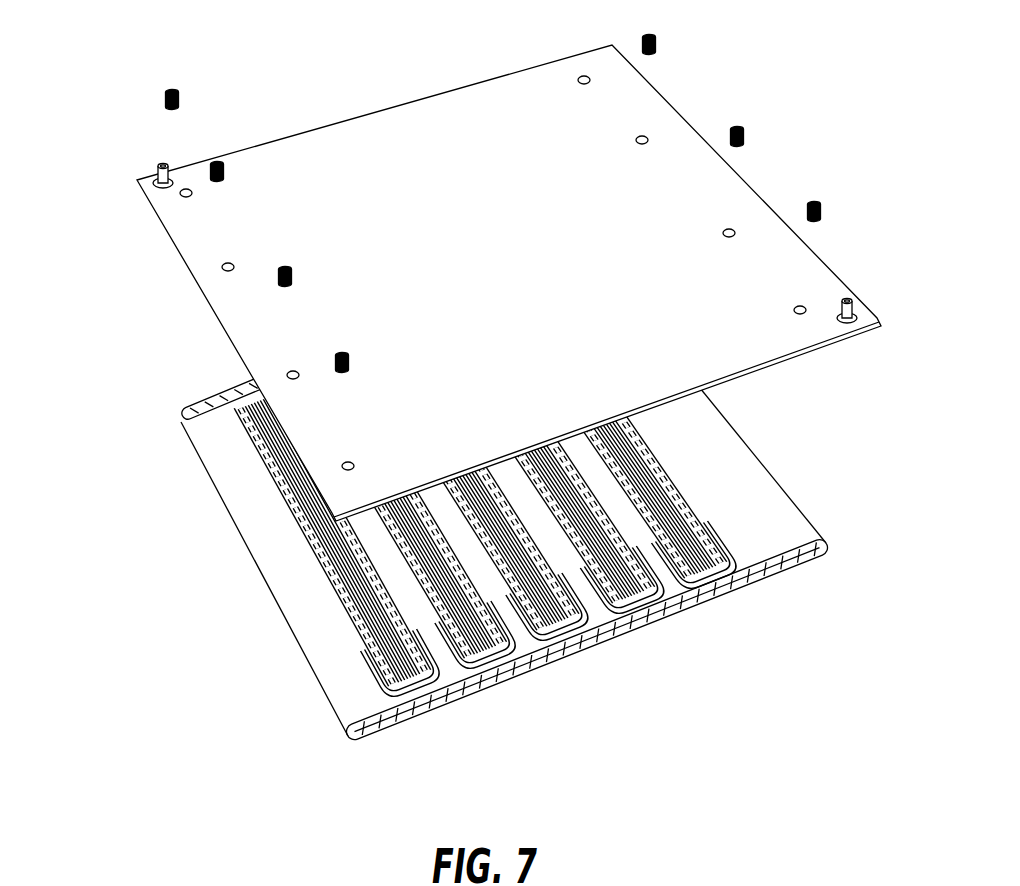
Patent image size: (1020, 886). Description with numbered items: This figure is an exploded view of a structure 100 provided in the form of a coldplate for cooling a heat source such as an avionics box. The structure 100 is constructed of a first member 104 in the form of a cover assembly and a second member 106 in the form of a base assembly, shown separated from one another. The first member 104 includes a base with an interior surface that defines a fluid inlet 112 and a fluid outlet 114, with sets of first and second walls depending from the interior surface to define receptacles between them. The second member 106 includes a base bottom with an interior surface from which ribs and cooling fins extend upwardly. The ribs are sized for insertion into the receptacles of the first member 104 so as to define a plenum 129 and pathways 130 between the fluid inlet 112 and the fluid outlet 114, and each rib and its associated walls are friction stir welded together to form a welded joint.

The structure 100 is at (722, 66).
The first member 104 is at (355, 148).
The second member 106 is at (318, 633).
The fluid inlet 112 is at (848, 300).
The fluid outlet 114 is at (160, 163).
The plenum 129 is at (492, 673).
The pathways 130 is at (698, 580).